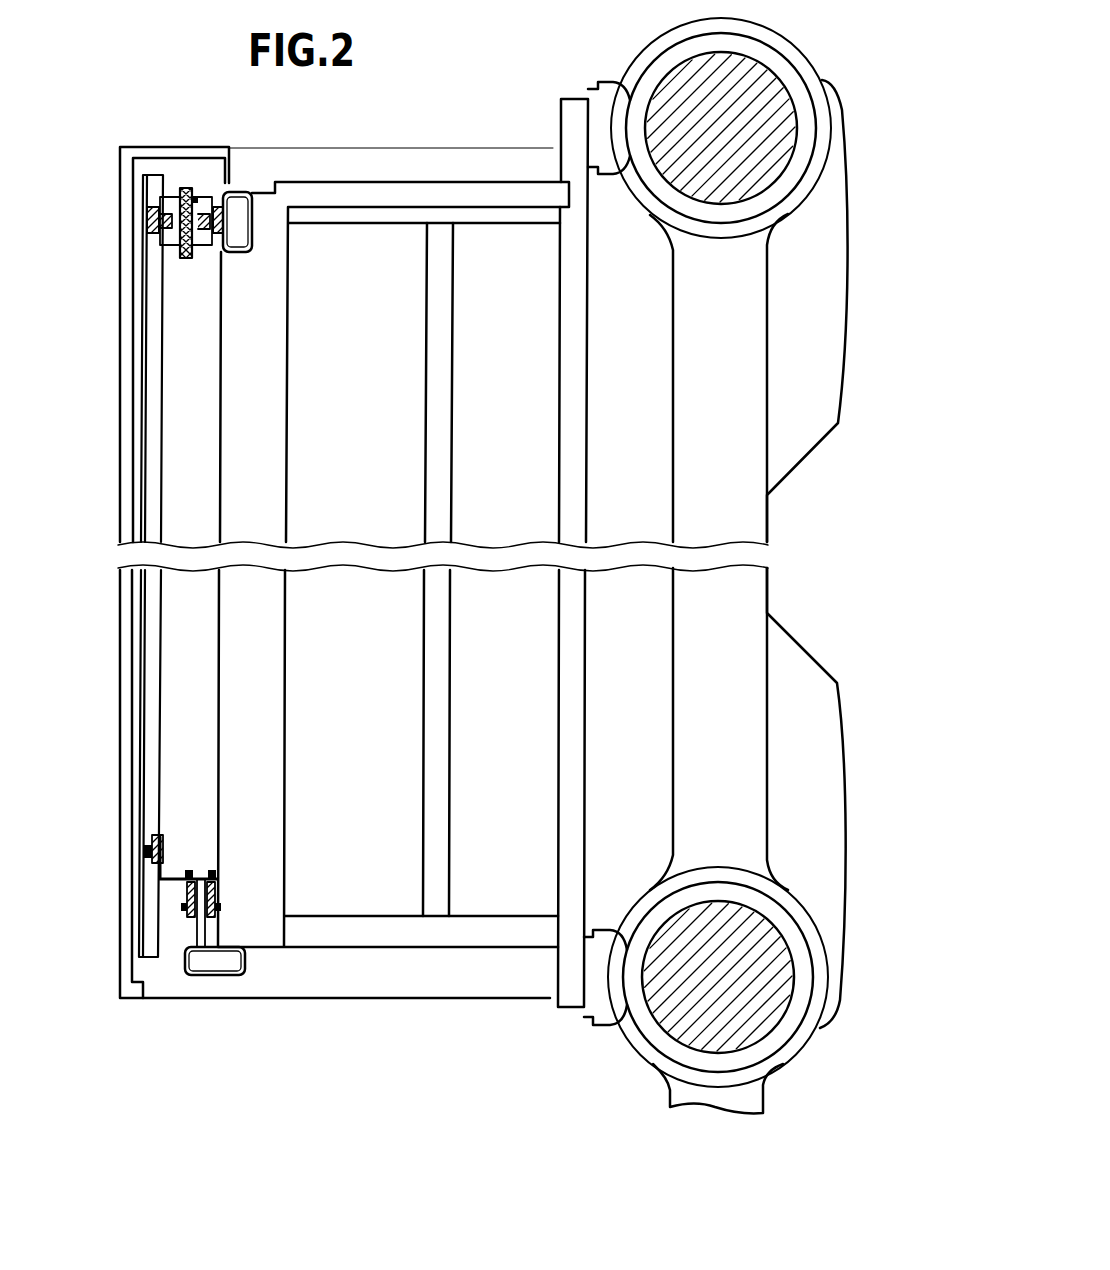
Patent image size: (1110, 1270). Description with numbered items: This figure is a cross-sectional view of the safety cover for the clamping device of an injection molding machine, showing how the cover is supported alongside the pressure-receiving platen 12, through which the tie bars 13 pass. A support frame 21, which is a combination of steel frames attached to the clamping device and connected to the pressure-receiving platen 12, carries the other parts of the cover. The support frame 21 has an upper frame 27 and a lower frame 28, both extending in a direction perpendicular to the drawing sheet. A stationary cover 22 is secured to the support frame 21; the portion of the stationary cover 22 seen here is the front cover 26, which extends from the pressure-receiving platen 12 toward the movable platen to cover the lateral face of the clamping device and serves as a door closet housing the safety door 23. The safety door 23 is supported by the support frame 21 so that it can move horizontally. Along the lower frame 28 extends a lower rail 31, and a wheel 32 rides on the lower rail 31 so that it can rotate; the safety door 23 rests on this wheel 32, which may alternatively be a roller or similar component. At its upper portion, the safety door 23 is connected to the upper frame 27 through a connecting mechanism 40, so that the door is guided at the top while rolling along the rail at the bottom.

The pressure-receiving platen 12 is at (795, 395).
The tie bars 13 is at (720, 117).
The support frame 21 is at (409, 173).
The stationary cover 22 is at (120, 390).
The safety door 23 is at (140, 488).
The front cover 26 is at (146, 578).
The upper frame 27 is at (232, 190).
The lower frame 28 is at (211, 977).
The lower rail 31 is at (193, 938).
The wheel 32 is at (190, 926).
The connecting mechanism 40 is at (181, 175).